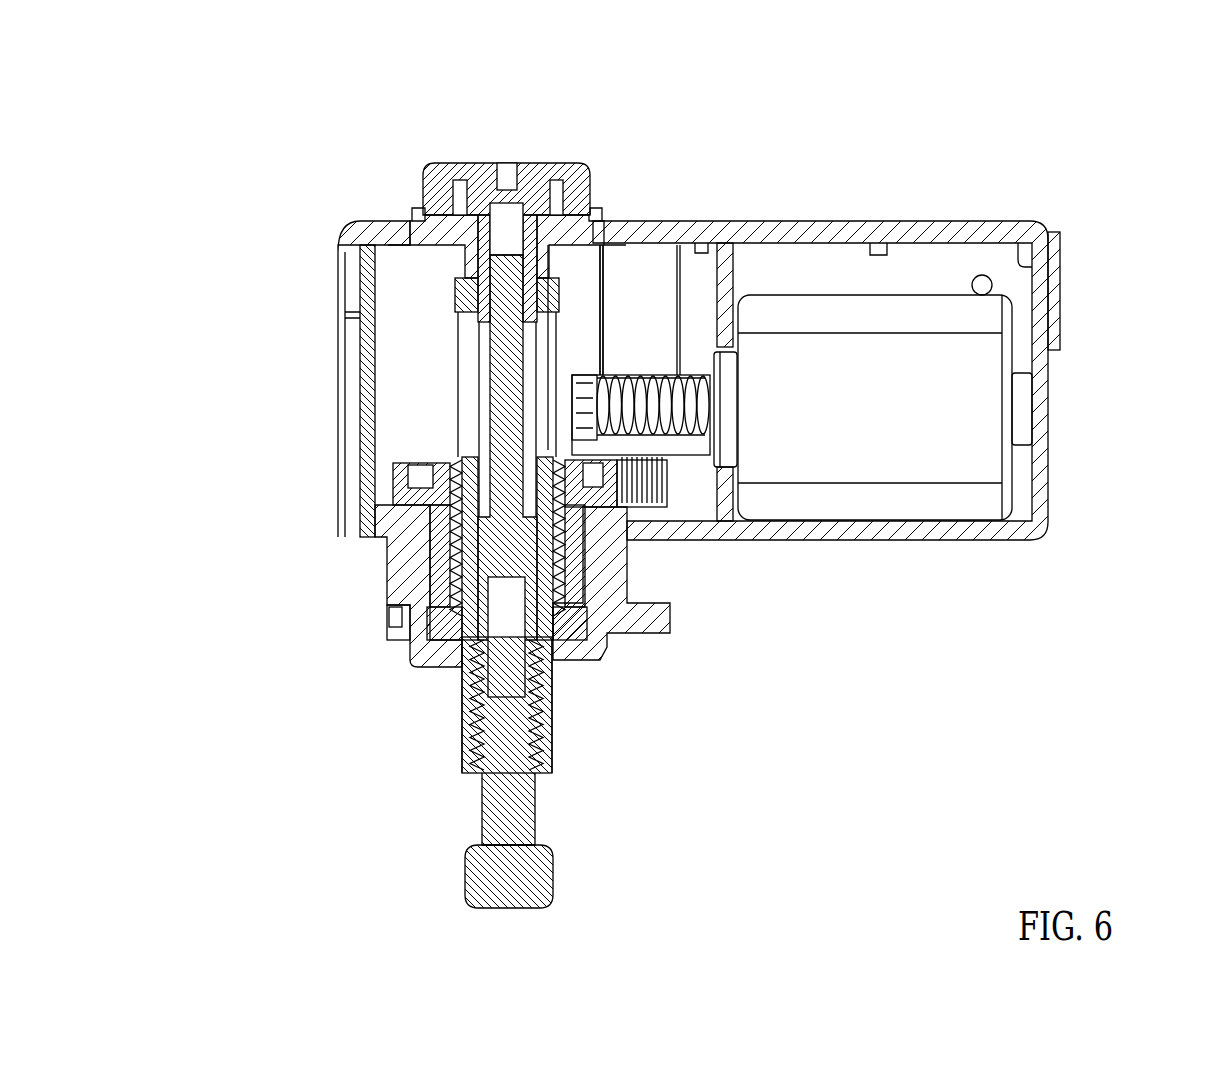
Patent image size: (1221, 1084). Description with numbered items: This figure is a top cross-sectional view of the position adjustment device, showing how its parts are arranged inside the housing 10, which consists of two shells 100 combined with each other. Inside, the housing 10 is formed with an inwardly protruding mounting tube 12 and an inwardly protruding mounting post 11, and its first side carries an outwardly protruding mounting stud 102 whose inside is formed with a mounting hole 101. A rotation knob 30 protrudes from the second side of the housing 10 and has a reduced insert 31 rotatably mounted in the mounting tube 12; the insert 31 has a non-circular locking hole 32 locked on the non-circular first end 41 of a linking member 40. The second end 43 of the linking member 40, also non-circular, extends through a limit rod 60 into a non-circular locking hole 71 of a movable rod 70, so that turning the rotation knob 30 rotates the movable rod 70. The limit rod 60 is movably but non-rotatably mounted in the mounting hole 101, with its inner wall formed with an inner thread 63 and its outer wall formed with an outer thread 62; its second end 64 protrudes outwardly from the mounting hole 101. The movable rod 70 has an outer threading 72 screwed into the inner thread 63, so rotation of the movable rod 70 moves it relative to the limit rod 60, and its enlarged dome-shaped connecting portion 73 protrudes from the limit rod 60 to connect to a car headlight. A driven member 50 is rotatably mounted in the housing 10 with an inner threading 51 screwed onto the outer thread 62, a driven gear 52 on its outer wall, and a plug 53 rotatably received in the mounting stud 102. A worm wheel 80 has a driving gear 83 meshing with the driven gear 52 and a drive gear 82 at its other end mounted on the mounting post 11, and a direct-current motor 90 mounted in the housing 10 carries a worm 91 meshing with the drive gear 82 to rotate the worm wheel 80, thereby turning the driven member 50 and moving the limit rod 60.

The housing 10 is at (1068, 452).
The mounting post 11 is at (641, 277).
The mounting tube 12 is at (478, 265).
The rotation knob 30 is at (418, 190).
The insert 31 is at (542, 268).
The locking hole 32 is at (344, 336).
The first end 41 is at (476, 292).
The linking member 40 is at (488, 355).
The second end 43 is at (362, 598).
The driven member 50 is at (415, 460).
The inner threading 51 is at (353, 548).
The outer thread 62 is at (400, 480).
The driven gear 52 is at (698, 583).
The driving gear 83 is at (627, 513).
The plug 53 is at (400, 640).
The limit rod 60 is at (458, 752).
The inner thread 63 is at (656, 706).
The outer threading 72 is at (548, 730).
The second end 64 is at (460, 737).
The movable rod 70 is at (540, 810).
The locking hole 71 is at (440, 577).
The connecting portion 73 is at (475, 870).
The worm wheel 80 is at (693, 465).
The drive gear 82 is at (850, 284).
The worm 91 is at (668, 375).
The direct-current motor 90 is at (948, 495).
The shells 100 is at (866, 548).
The mounting hole 101 is at (395, 657).
The mounting stud 102 is at (400, 557).